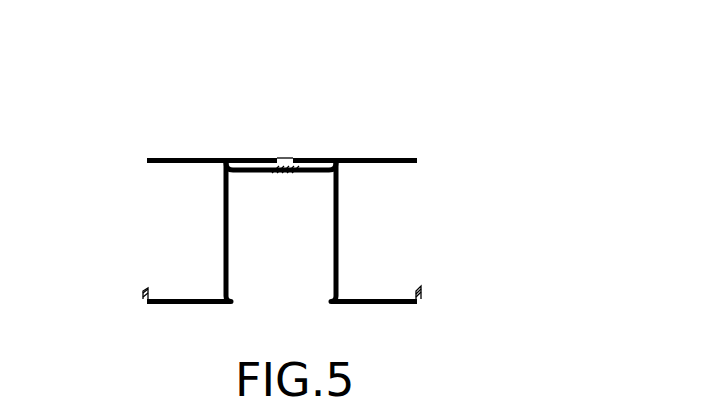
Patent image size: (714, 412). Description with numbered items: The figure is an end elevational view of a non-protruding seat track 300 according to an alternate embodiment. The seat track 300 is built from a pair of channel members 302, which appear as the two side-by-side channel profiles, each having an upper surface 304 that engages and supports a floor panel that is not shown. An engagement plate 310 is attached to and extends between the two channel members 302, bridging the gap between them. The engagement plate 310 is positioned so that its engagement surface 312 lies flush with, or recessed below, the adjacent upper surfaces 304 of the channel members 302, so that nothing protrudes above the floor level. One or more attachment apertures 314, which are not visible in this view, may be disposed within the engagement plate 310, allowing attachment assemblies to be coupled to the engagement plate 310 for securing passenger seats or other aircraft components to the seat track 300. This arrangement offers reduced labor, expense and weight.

The non-protruding seat track 300 is at (316, 184).
The channel members 302 is at (143, 292).
The upper surface 304 is at (150, 160).
The engagement plate 310 is at (255, 141).
The engagement surface 312 is at (283, 160).
The attachment apertures 314 is at (290, 158).